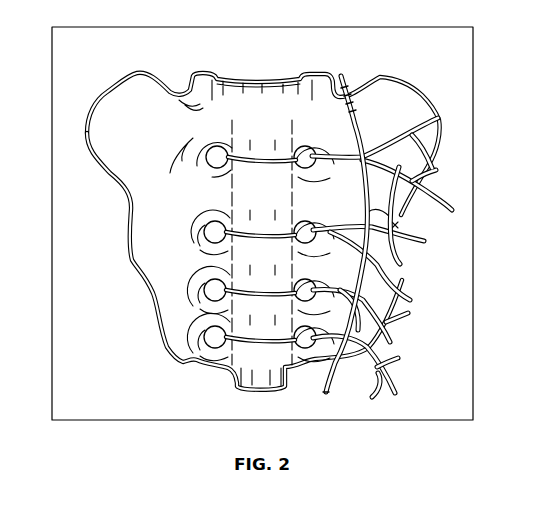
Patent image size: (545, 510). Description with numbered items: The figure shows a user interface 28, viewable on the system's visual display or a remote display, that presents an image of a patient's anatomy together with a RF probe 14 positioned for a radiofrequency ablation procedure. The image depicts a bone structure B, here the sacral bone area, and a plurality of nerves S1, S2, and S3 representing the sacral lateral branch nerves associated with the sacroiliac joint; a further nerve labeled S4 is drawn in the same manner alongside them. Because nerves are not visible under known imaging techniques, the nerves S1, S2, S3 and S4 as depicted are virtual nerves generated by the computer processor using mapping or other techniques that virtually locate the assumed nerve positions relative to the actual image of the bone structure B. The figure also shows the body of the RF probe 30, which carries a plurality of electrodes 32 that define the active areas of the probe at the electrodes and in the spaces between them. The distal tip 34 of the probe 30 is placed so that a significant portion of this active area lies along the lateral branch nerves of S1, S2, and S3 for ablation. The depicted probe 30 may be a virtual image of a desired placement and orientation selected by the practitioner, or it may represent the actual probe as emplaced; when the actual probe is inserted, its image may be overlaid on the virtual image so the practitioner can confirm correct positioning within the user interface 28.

The user interface 28 is at (438, 27).
The RF probe 14 is at (367, 129).
The distal tip 34 is at (344, 87).
The bone structure B is at (346, 83).
The body of the RF probe 30 is at (356, 142).
The electrodes 32 is at (357, 110).
The sacral lateral branch nerve S1 is at (335, 164).
The sacral lateral branch nerve S2 is at (328, 242).
The sacral lateral branch nerve S3 is at (325, 295).
The fourth sacral nerve / foramen S4 is at (359, 362).